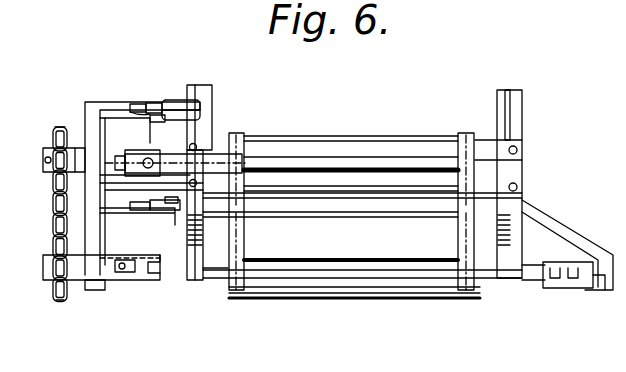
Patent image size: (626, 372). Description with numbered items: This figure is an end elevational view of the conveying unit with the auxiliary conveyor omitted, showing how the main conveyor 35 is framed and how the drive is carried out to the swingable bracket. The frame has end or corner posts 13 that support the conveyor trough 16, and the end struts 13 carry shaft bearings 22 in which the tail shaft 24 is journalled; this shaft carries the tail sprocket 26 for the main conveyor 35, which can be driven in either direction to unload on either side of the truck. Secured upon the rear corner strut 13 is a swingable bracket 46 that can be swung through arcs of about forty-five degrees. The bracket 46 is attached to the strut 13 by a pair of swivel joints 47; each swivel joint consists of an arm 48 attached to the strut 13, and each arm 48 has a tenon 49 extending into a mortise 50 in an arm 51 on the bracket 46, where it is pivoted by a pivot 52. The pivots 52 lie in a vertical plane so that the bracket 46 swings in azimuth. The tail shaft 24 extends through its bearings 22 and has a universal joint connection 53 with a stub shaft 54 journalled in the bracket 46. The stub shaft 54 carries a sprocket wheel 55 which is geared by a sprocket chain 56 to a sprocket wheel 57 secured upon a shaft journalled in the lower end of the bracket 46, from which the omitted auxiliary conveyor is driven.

The end or corner posts 13 is at (205, 90).
The conveyor trough 16 is at (505, 105).
The shaft bearings 22 is at (201, 146).
The tail shaft 24 is at (271, 173).
The tail sprocket 26 is at (460, 165).
The main conveyor 35 is at (244, 236).
The swingable bracket 46 is at (85, 115).
The swivel joints 47 is at (149, 102).
The arm 48 is at (172, 100).
The tenon 49 is at (154, 122).
The mortise 50 is at (130, 109).
The arm 51 is at (85, 100).
The pivot 52 is at (138, 103).
The universal joint connection 53 is at (140, 160).
The stub shaft 54 is at (44, 166).
The sprocket wheel 55 is at (53, 129).
The sprocket chain 56 is at (53, 196).
The sprocket wheel 57 is at (67, 301).